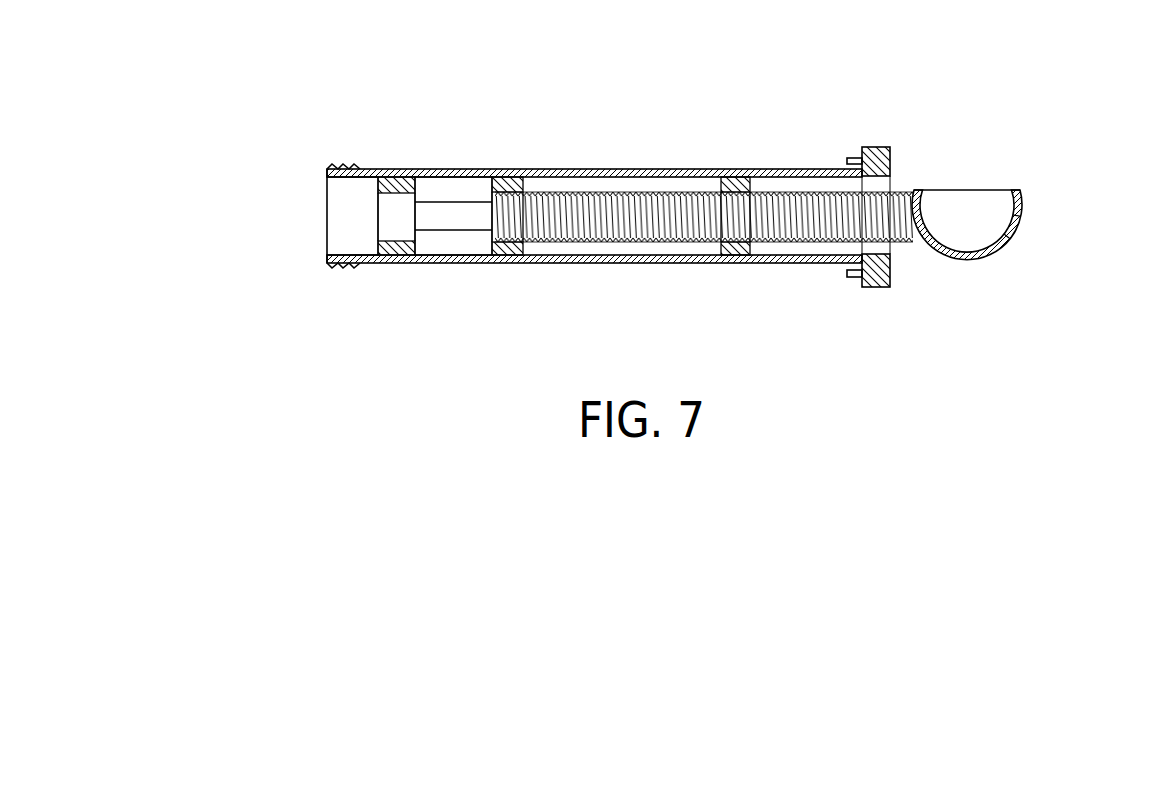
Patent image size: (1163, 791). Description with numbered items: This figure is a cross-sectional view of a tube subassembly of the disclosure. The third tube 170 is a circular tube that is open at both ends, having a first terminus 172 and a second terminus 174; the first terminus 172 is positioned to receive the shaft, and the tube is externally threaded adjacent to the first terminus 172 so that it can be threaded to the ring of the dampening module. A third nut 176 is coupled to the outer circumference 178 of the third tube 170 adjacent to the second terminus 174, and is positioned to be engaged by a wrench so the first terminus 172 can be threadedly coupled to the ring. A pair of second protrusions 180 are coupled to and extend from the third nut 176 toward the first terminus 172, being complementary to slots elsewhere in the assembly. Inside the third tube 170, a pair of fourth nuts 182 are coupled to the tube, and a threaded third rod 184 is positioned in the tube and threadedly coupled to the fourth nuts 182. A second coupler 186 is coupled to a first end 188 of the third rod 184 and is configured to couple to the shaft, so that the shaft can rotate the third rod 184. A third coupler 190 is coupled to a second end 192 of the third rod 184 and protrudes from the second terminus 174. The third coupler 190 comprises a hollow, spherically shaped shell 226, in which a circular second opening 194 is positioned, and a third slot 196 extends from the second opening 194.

The third tube 170 is at (600, 169).
The first terminus 172 is at (327, 232).
The second terminus 174 is at (893, 178).
The third nut 176 is at (873, 147).
The outer circumference 178 is at (818, 264).
The second protrusions 180 is at (850, 157).
The fourth nuts 182 is at (735, 250).
The third rod 184 is at (531, 213).
The second coupler 186 is at (397, 210).
The first end 188 is at (380, 217).
The third coupler 190 is at (1003, 248).
The second end 192 is at (913, 243).
The second opening 194 is at (951, 183).
The third slot 196 is at (1020, 203).
The shell 226 is at (977, 200).